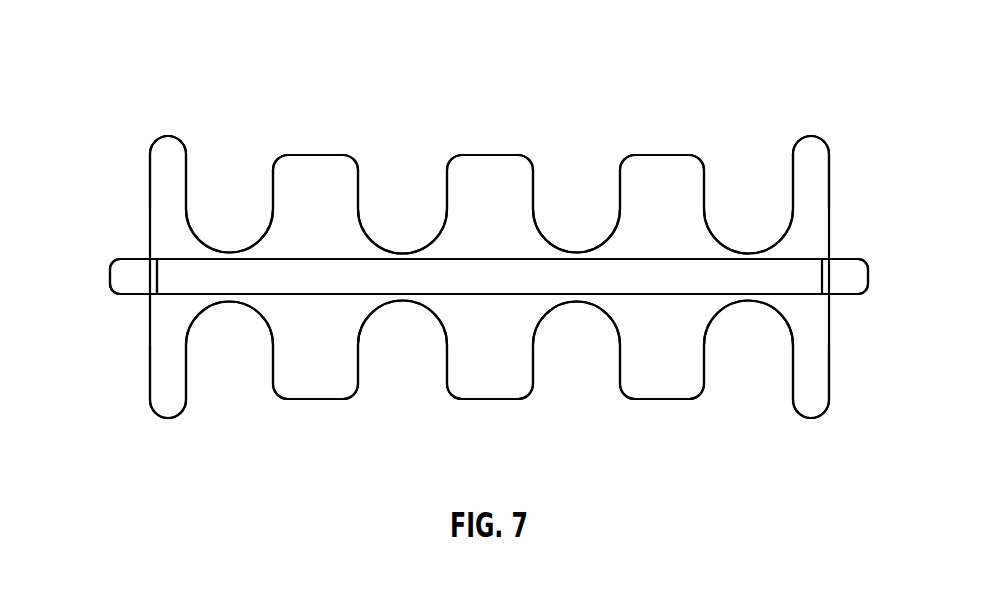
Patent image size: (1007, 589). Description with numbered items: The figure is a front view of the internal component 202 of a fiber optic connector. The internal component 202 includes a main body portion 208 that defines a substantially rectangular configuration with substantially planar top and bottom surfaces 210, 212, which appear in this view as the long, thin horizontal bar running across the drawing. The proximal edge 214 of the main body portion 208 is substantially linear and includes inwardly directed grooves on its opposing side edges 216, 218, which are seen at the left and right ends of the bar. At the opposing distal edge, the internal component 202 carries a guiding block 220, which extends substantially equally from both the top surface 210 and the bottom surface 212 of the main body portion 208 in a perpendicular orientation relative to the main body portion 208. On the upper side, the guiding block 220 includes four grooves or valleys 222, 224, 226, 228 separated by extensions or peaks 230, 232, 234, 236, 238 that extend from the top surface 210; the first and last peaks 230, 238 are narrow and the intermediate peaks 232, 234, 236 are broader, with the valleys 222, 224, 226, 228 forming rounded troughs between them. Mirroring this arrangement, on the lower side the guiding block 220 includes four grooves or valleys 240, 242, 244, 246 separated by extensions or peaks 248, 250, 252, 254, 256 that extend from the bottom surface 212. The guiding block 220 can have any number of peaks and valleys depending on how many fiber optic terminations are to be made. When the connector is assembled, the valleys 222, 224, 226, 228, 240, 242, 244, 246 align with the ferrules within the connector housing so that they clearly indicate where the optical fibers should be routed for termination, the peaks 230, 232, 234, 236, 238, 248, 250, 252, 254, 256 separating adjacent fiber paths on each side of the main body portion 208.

The internal component 202 is at (867, 50).
The main body portion 208 is at (128, 296).
The top surface 210 is at (482, 258).
The bottom surface 212 is at (500, 295).
The proximal edge 214 is at (183, 273).
The side edge 216 is at (156, 277).
The side edge 218 is at (826, 278).
The guiding block 220 is at (830, 182).
The valley 222 is at (222, 250).
The valley 224 is at (398, 250).
The valley 226 is at (573, 250).
The valley 228 is at (742, 250).
The peak 230 is at (172, 137).
The peak 232 is at (320, 155).
The peak 234 is at (492, 155).
The peak 236 is at (667, 155).
The peak 238 is at (812, 137).
The valley 240 is at (236, 304).
The valley 242 is at (412, 304).
The valley 244 is at (585, 304).
The valley 246 is at (760, 304).
The peak 248 is at (163, 418).
The peak 250 is at (313, 400).
The peak 252 is at (488, 400).
The peak 254 is at (663, 400).
The peak 256 is at (810, 418).